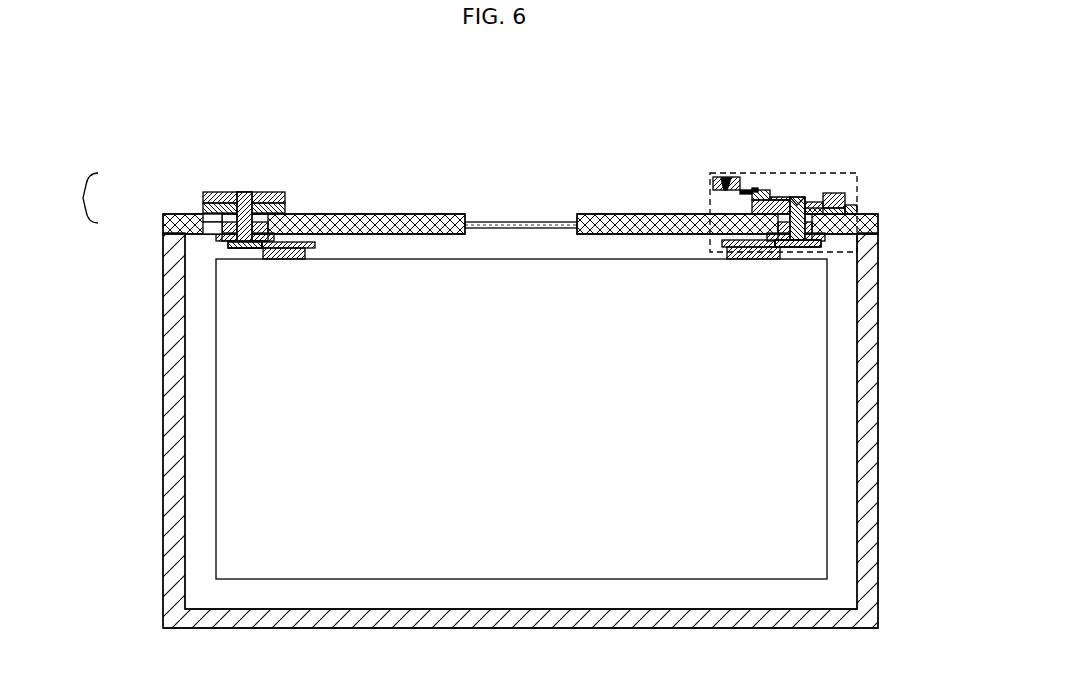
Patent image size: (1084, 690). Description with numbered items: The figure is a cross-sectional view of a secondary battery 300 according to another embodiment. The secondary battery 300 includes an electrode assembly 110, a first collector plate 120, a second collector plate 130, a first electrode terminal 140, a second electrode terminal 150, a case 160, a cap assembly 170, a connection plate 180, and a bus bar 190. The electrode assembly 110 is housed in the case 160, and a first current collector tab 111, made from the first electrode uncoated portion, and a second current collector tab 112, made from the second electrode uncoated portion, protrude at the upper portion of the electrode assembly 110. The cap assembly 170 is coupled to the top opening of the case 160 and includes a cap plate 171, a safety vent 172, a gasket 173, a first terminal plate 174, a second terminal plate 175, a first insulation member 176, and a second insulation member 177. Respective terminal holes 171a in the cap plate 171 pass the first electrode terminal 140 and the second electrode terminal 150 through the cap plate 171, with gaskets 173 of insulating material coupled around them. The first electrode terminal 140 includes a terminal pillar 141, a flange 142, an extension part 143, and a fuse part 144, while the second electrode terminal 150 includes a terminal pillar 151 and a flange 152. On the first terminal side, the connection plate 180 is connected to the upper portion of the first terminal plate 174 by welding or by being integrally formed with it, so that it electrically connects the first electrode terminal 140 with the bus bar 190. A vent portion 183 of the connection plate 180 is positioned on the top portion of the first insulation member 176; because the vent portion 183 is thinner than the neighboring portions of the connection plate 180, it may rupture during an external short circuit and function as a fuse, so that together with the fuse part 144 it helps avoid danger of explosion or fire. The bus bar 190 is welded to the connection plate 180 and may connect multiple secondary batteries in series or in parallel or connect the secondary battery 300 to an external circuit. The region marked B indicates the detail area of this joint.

The secondary battery 300 is at (76, 109).
The electrode assembly 110 is at (832, 499).
The first current collector tab 111 is at (757, 262).
The second current collector tab 112 is at (284, 260).
The first collector plate 120 is at (818, 245).
The second collector plate 130 is at (226, 244).
The first electrode terminal 140 is at (886, 164).
The terminal pillar 141 is at (850, 213).
The flange 142 is at (827, 150).
The extension part 143 is at (808, 208).
The fuse part 144 is at (826, 207).
The second electrode terminal 150 is at (72, 198).
The terminal pillar 151 is at (207, 222).
The flange 152 is at (213, 233).
The case 160 is at (868, 407).
The cap assembly 170 is at (507, 204).
The cap plate 171 is at (613, 214).
The terminal hole 171a is at (252, 192).
The safety vent 172 is at (536, 224).
The gasket 173 is at (287, 205).
The first terminal plate 174 is at (782, 199).
The second terminal plate 175 is at (225, 192).
The first insulation member 176 is at (745, 194).
The second insulation member 177 is at (205, 192).
The connection plate 180 is at (762, 190).
The vent portion 183 is at (752, 189).
The bus bar 190 is at (713, 183).
The bonding portion B is at (725, 177).